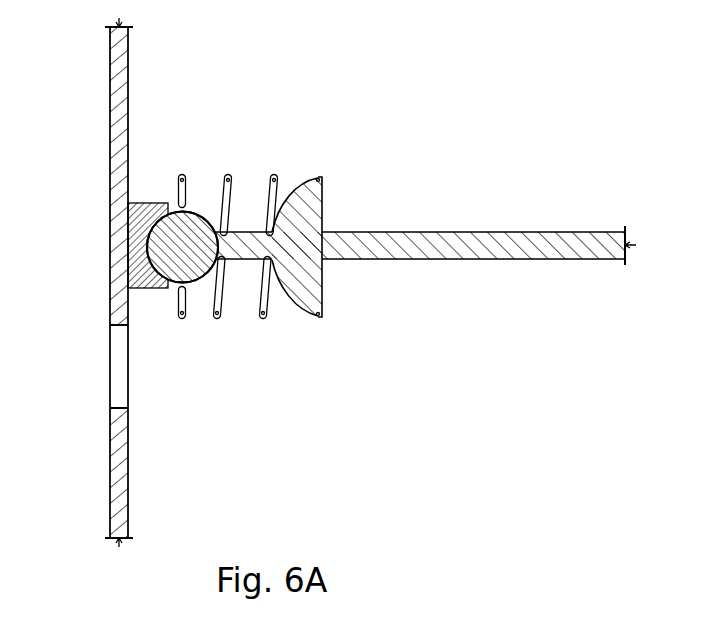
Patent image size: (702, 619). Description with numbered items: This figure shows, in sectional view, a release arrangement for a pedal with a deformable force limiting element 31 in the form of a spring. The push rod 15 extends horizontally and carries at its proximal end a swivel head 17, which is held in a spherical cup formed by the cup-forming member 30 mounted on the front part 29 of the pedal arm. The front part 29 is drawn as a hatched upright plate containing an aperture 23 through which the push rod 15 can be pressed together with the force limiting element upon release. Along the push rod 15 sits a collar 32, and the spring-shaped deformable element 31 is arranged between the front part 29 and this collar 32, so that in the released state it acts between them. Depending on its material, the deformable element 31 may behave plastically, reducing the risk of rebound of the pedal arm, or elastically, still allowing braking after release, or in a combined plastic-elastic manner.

The front part of the pedal arm 29 is at (118, 65).
The aperture 23 is at (120, 368).
The cup-forming member 30 is at (143, 204).
The deformable force limiting element 31 is at (232, 200).
The push rod 15 is at (507, 240).
The collar 32 is at (310, 205).
The swivel head 17 is at (181, 245).